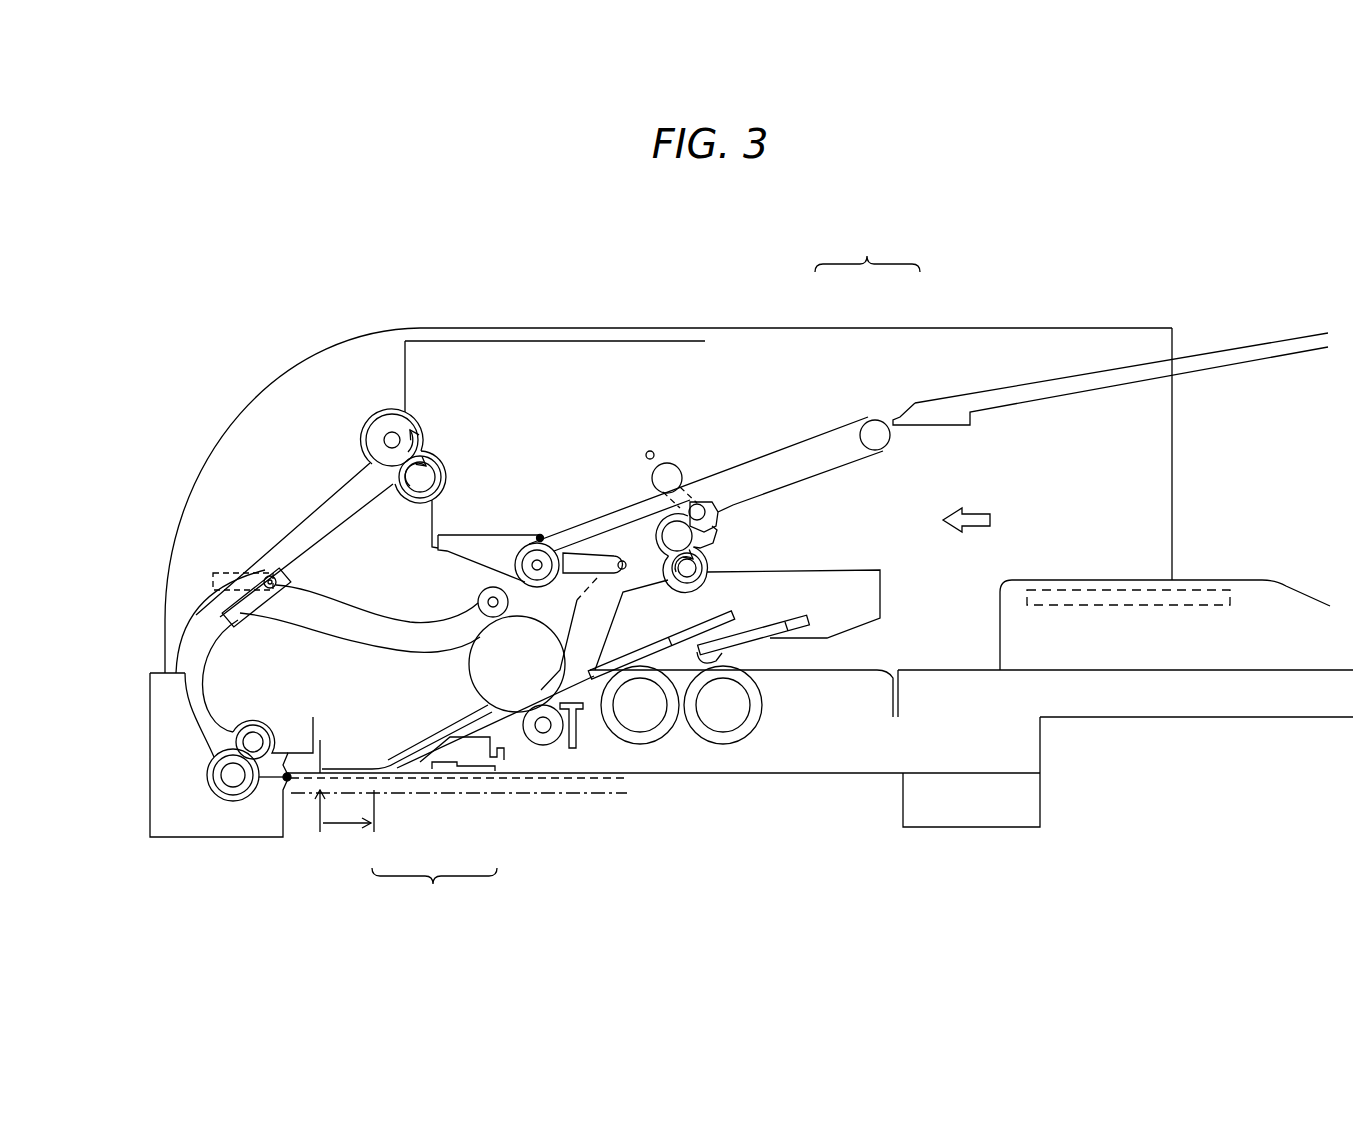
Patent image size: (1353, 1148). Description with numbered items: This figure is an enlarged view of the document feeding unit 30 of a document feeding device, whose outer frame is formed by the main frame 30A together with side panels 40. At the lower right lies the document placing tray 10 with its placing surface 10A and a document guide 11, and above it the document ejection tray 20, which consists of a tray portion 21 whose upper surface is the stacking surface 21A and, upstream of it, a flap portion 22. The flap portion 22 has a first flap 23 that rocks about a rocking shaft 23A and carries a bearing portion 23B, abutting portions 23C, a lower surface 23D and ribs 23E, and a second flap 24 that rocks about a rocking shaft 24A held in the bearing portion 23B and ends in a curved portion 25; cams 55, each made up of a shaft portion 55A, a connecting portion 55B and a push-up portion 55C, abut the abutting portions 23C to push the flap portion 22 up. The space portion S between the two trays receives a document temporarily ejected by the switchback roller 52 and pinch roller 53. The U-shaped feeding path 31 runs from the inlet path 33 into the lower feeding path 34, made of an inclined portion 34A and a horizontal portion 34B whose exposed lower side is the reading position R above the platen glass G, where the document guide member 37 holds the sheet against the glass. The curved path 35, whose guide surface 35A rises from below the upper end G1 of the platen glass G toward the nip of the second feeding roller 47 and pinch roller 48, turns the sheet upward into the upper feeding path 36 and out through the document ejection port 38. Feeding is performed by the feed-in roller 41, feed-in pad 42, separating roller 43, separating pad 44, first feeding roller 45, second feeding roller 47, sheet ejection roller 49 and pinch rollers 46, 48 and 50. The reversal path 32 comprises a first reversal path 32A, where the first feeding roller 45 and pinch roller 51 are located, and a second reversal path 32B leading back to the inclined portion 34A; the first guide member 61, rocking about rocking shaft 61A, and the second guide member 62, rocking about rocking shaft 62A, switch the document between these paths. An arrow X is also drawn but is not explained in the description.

The document placing tray 10 is at (1160, 722).
The placing surface 10A is at (960, 668).
The document guide 11 is at (1250, 660).
The document ejection tray 20 is at (867, 249).
The tray portion 21 is at (962, 390).
The stacking surface 21A is at (1053, 380).
The flap portion 22 is at (836, 425).
The first flap 23 is at (812, 440).
The rocking shaft 23A is at (890, 435).
The bearing portion 23B is at (527, 543).
The abutting portions 23C is at (785, 448).
The lower surface 23D is at (818, 470).
The ribs 23E is at (842, 460).
The second flap 24 is at (458, 528).
The rocking shaft 24A is at (520, 553).
The curved portion 25 is at (541, 534).
The document feeding unit 30 is at (175, 340).
The main frame 30A is at (313, 352).
The feeding path 31 is at (306, 494).
The reversal path 32 is at (650, 610).
The first reversal path 32A is at (393, 622).
The second reversal path 32B is at (595, 642).
The inlet path 33 is at (828, 658).
The lower feeding path 34 is at (434, 895).
The inclined portion 34A is at (447, 747).
The horizontal portion 34B is at (387, 778).
The curved path 35 is at (190, 641).
The guide surface 35A is at (290, 770).
The upper feeding path 36 is at (292, 534).
The document guide member 37 is at (423, 745).
The document ejection port 38 is at (432, 430).
The side panels 40 is at (1126, 338).
The feed-in roller 41 is at (750, 727).
The feed-in pad 42 is at (792, 618).
The separating roller 43 is at (660, 730).
The separating pad 44 is at (735, 613).
The first feeding roller 45 is at (469, 665).
The pinch roller 46 is at (550, 744).
The second feeding roller 47 is at (220, 792).
The pinch roller 48 is at (248, 727).
The sheet ejection roller 49 is at (410, 500).
The pinch roller 50 is at (382, 430).
The pinch roller 51 is at (478, 602).
The switchback roller 52 is at (708, 566).
The pinch roller 53 is at (700, 540).
The cams 55 is at (645, 462).
The shaft portion 55A is at (669, 462).
The connecting portion 55B is at (652, 490).
The push-up portion 55C is at (700, 502).
The first guide member 61 is at (250, 624).
The rocking shaft 61A is at (288, 582).
The second guide member 62 is at (578, 570).
The rocking shaft 62A is at (607, 556).
The platen glass G is at (535, 797).
The upper end G1 is at (283, 782).
The reading position R is at (347, 824).
The space portion S is at (810, 553).
The conveying direction X is at (979, 520).